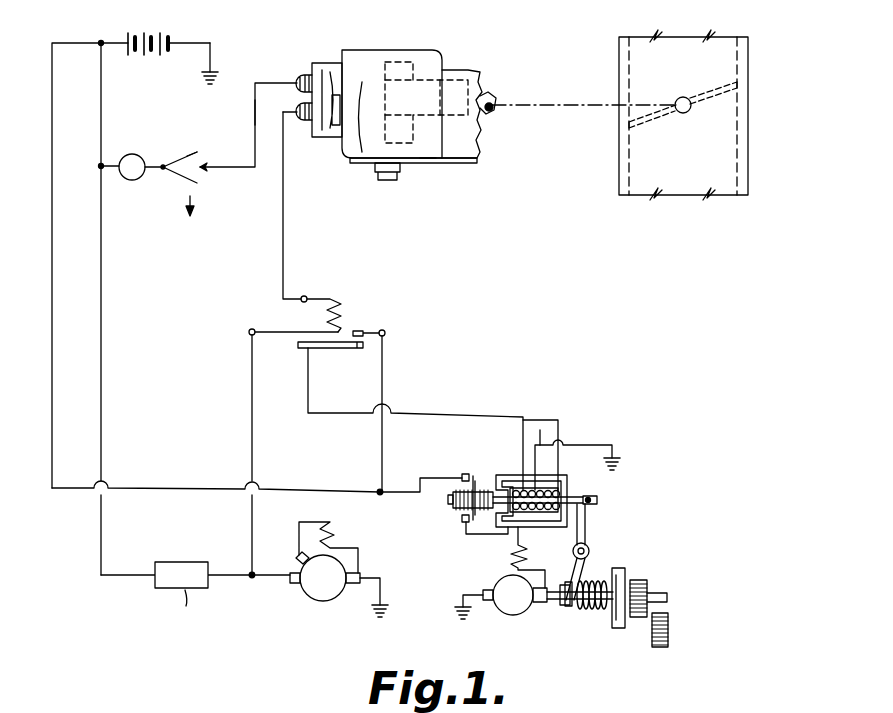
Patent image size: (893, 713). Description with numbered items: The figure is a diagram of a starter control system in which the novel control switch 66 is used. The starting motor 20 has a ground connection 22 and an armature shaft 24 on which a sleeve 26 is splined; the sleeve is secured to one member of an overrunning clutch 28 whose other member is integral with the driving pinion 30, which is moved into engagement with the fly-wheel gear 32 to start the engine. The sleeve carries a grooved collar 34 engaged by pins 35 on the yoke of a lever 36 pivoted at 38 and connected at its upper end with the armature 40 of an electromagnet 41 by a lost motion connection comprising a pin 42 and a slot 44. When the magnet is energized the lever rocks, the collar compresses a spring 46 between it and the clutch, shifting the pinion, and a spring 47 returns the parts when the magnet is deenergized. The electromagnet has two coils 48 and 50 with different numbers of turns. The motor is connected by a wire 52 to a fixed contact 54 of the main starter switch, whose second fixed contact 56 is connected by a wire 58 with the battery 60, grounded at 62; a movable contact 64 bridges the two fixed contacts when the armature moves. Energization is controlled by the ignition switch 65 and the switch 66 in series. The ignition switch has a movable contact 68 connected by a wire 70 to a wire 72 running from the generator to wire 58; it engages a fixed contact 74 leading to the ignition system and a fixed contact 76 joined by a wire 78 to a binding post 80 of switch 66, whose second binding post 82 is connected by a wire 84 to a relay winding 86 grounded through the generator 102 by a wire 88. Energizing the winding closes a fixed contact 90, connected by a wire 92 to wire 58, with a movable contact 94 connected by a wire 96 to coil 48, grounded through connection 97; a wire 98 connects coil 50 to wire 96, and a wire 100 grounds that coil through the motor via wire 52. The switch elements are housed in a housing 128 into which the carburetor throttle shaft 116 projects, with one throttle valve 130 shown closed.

The starting motor 20 is at (517, 614).
The ground connection 22 is at (462, 610).
The armature shaft 24 is at (557, 602).
The sleeve 26 is at (600, 612).
The overrunning clutch 28 is at (620, 574).
The driving pinion 30 is at (648, 586).
The fly-wheel gear 32 is at (669, 632).
The grooved collar 34 is at (572, 606).
The pins 35 is at (565, 590).
The lever 36 is at (587, 521).
The pivot 38 is at (589, 548).
The armature 40 is at (562, 498).
The electromagnet 41 is at (511, 480).
The pin 42 is at (598, 497).
The slot 44 is at (592, 500).
The spring 46 is at (621, 575).
The spring 47 is at (588, 572).
The coil 48 is at (553, 490).
The coil 50 is at (514, 478).
The wire 52 is at (472, 537).
The fixed contact 54 is at (463, 522).
The fixed contact 56 is at (463, 474).
The wire 58 is at (333, 491).
The battery 60 is at (169, 40).
The ground 62 is at (220, 78).
The movable contact 64 is at (474, 476).
The ignition switch 65 is at (171, 176).
The switch 66 is at (418, 162).
The movable contact 68 is at (173, 160).
The wire 70 is at (148, 165).
The wire 72 is at (100, 284).
The fixed contact 74 is at (192, 200).
The fixed contact 76 is at (203, 165).
The wire 78 is at (255, 108).
The binding post 80 is at (306, 74).
The binding post 82 is at (305, 122).
The wire 84 is at (285, 268).
The winding 86 is at (344, 312).
The wire 88 is at (252, 406).
The fixed contact 90 is at (360, 331).
The wire 92 is at (384, 372).
The movable contact 94 is at (330, 359).
The wire 96 is at (308, 386).
The connection 97 is at (612, 452).
The wire 98 is at (527, 432).
The wire 100 is at (510, 533).
The generator 102 is at (333, 595).
The shaft 116 is at (491, 100).
The housing 128 is at (369, 50).
The throttle valve 130 is at (712, 100).